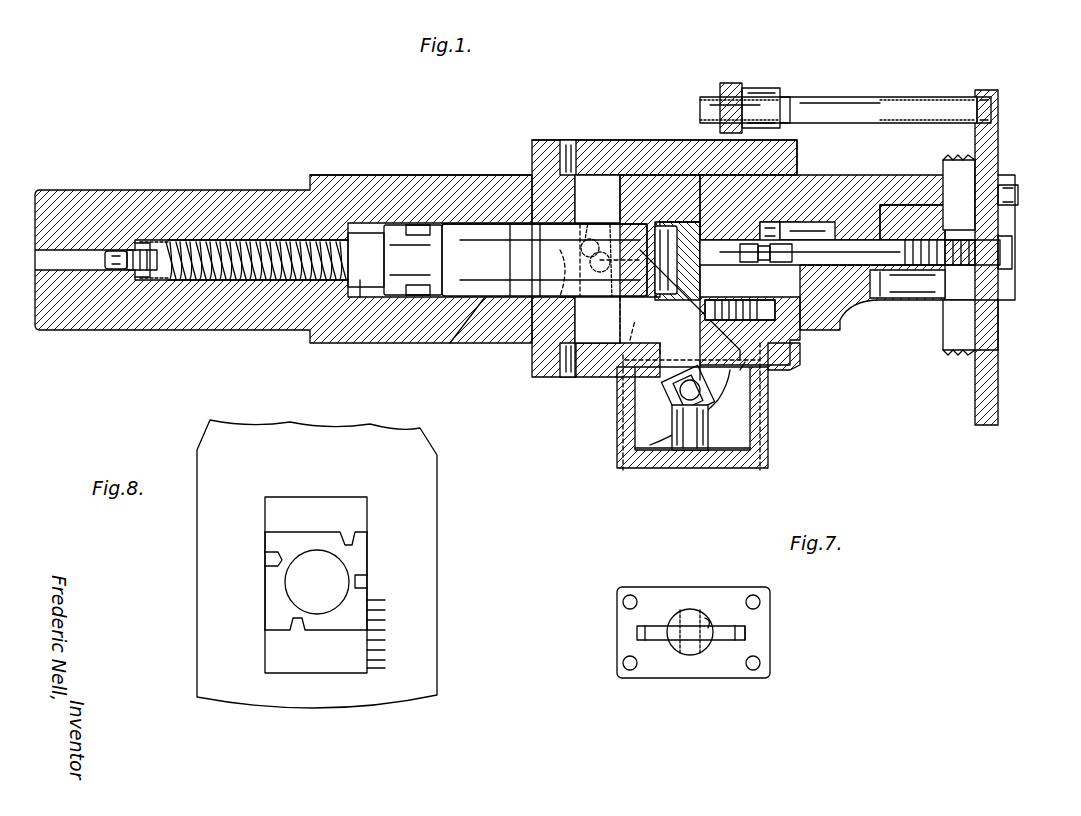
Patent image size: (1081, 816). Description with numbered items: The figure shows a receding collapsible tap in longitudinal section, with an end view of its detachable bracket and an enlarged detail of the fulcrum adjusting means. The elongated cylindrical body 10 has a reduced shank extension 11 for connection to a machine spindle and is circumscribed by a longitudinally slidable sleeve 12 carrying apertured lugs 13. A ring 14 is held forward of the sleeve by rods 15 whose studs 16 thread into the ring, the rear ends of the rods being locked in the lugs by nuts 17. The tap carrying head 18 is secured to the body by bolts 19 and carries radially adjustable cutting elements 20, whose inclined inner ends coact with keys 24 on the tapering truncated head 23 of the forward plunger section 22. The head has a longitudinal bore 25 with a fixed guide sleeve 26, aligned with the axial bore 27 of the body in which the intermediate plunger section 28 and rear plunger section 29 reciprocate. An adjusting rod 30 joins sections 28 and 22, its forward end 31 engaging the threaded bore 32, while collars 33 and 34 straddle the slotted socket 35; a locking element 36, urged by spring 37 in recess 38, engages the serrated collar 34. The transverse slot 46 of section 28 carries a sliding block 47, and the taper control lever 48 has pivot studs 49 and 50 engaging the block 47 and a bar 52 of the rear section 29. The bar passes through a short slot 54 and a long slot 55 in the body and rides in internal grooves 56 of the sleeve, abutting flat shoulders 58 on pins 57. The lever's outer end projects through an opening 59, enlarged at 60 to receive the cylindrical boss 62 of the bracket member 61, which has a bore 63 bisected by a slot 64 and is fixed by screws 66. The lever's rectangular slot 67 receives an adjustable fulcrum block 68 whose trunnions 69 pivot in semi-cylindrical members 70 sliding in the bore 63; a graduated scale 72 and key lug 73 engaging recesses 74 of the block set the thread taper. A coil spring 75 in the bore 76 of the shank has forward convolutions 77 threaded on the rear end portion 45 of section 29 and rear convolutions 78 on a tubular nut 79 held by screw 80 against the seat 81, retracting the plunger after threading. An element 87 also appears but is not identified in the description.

In FIG. 1, the body 10 is at (365, 178).
In FIG. 1, the shank extension 11 is at (215, 190).
In FIG. 1, the sleeve 12 is at (628, 140).
In FIG. 1, the apertured lugs 13 is at (732, 83).
In FIG. 1, the ring 14 is at (998, 130).
In FIG. 1, the rods 15 is at (892, 97).
In FIG. 1, the studs 16 is at (992, 100).
In FIG. 1, the nuts 17 is at (775, 88).
In FIG. 1, the tap carrying head 18 is at (912, 205).
In FIG. 1, the bolts 19 is at (792, 340).
In FIG. 1, the cutting elements 20 is at (980, 172).
In FIG. 1, the forward plunger section 22 is at (920, 298).
In FIG. 1, the tapering truncated head 23 is at (980, 290).
In FIG. 1, the keys 24 is at (1016, 222).
In FIG. 1, the bore 25 is at (820, 240).
In FIG. 1, the guide sleeve 26 is at (860, 222).
In FIG. 1, the axial bore 27 is at (472, 223).
In FIG. 1, the intermediate plunger section 28 is at (690, 222).
In FIG. 1, the rear plunger section 29 is at (544, 260).
In FIG. 1, the adjusting rod 30 is at (878, 265).
In FIG. 1, the forward end 31 is at (1012, 250).
In FIG. 1, the bore 32 is at (998, 230).
In FIG. 1, the collar 33 is at (785, 265).
In FIG. 1, the collar 34 is at (775, 308).
In FIG. 1, the socket 35 is at (807, 231).
In FIG. 1, the locking element 36 is at (772, 230).
In FIG. 1, the spring 37 is at (700, 258).
In FIG. 1, the recess 38 is at (690, 236).
In FIG. 1, the rear end portion 45 is at (413, 260).
In FIG. 1, the transverse slot 46 is at (595, 222).
In FIG. 1, the block 47 is at (610, 225).
In FIG. 1, the taper control lever 48 is at (637, 320).
In FIG. 8, the taper control lever 48 is at (317, 564).
In FIG. 7, the taper control lever 48 is at (726, 640).
In FIG. 1, the pivot stud 49 is at (565, 297).
In FIG. 1, the pivot stud 50 is at (588, 250).
In FIG. 1, the bar 52 is at (597, 320).
In FIG. 1, the short longitudinal slot 54 is at (548, 160).
In FIG. 1, the long slot 55 is at (475, 343).
In FIG. 1, the internal grooves 56 is at (642, 175).
In FIG. 1, the pins 57 is at (568, 140).
In FIG. 1, the flat shoulders 58 is at (585, 175).
In FIG. 1, the opening 59 is at (785, 372).
In FIG. 1, the cylindrical enlargement 60 is at (720, 348).
In FIG. 7, the bracket member 61 is at (680, 587).
In FIG. 1, the cylindrical boss 62 is at (720, 400).
In FIG. 1, the cylindrical bore 63 is at (698, 450).
In FIG. 7, the cylindrical bore 63 is at (708, 618).
In FIG. 1, the slot 64 is at (660, 450).
In FIG. 7, the slot 64 is at (748, 636).
In FIG. 1, the screws 66 is at (762, 428).
In FIG. 1, the rectangular slot 67 is at (617, 410).
In FIG. 8, the rectangular slot 67 is at (265, 507).
In FIG. 1, the fulcrum block 68 is at (672, 388).
In FIG. 8, the fulcrum block 68 is at (360, 550).
In FIG. 1, the trunnions 69 is at (683, 398).
In FIG. 8, the trunnions 69 is at (292, 582).
In FIG. 7, the trunnions 69 is at (680, 612).
In FIG. 1, the semi-cylindrical members 70 is at (688, 448).
In FIG. 8, the graduated scale 72 is at (390, 630).
In FIG. 8, the key lug 73 is at (368, 580).
In FIG. 8, the recesses 74 is at (352, 538).
In FIG. 1, the coil spring 75 is at (270, 280).
In FIG. 1, the bore 76 is at (200, 280).
In FIG. 1, the forward end convolutions 77 is at (360, 297).
In FIG. 1, the rear end convolutions 78 is at (163, 278).
In FIG. 1, the tubular nut 79 is at (140, 270).
In FIG. 1, the screw 80 is at (118, 262).
In FIG. 1, the seat 81 is at (138, 243).
In FIG. 1, the piston end 87 is at (380, 287).